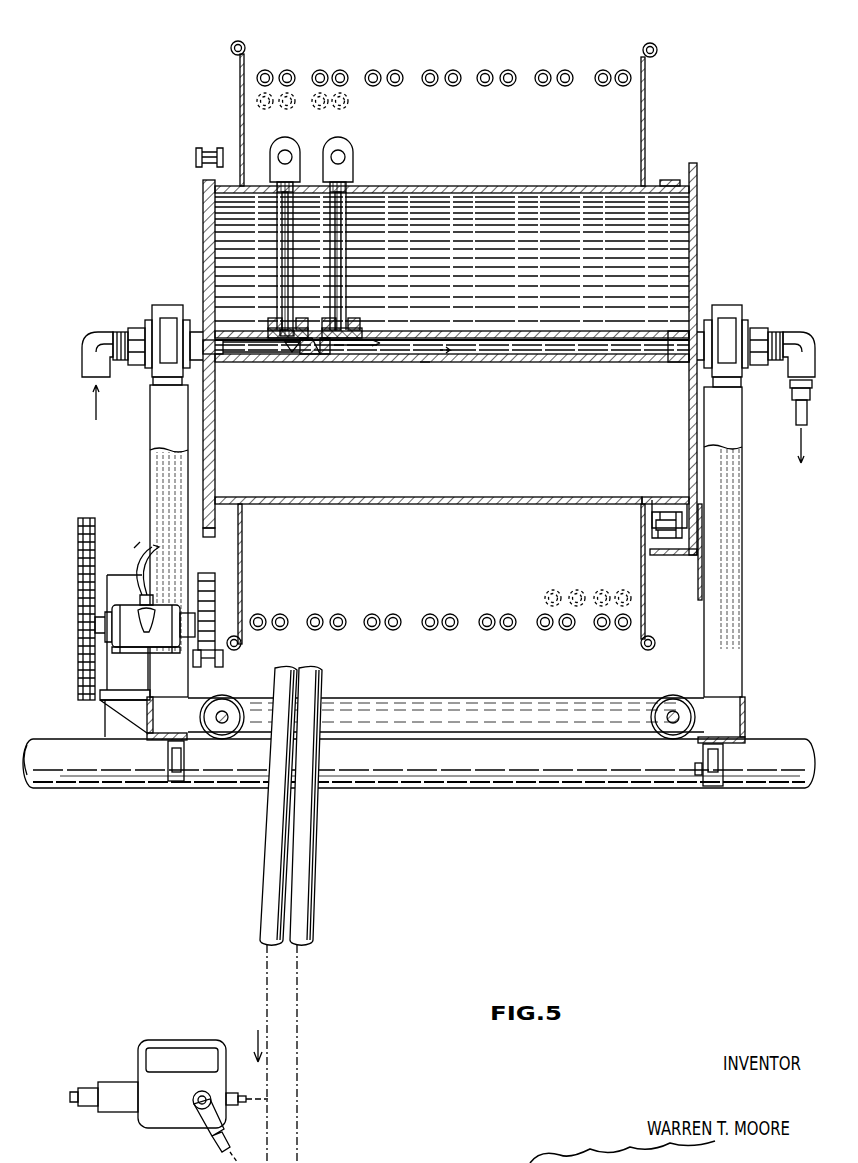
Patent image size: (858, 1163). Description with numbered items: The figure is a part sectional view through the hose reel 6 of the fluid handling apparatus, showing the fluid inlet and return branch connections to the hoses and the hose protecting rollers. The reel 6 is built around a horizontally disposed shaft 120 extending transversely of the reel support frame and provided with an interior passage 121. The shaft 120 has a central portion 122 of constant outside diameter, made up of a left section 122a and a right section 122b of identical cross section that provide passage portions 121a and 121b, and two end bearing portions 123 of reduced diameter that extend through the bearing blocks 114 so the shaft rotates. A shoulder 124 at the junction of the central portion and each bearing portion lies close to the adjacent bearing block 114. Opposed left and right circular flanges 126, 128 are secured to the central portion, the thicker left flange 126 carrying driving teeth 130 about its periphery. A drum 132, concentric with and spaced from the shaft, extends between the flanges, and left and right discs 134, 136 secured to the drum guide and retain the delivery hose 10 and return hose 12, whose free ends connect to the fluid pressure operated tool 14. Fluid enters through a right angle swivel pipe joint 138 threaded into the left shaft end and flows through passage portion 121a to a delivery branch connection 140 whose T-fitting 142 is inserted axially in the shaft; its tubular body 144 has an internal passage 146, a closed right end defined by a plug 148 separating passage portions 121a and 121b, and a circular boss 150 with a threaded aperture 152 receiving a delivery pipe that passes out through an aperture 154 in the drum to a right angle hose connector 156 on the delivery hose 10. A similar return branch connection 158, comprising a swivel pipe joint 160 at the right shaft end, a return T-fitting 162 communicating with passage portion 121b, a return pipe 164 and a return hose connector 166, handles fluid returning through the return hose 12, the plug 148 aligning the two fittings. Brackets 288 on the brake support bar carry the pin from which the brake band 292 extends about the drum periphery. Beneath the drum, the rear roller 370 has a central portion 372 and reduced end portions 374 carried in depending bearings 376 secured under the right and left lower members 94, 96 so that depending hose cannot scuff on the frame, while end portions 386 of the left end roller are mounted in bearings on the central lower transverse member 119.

The reel 6 is at (694, 193).
The delivery hose 10 is at (276, 816).
The return hose 12 is at (306, 886).
The fluid pressure operated tool 14 is at (194, 1100).
The right lower member 94 is at (743, 729).
The left lower member 96 is at (147, 740).
The bearing block 114 is at (166, 302).
The central lower transverse member 119 is at (410, 716).
The shaft 120 is at (680, 316).
The interior passage 121 is at (526, 332).
The passage portion 121a is at (238, 367).
The passage portion 121b is at (446, 356).
The central portion 122 is at (474, 332).
The left section 122a is at (208, 367).
The right section 122b is at (424, 362).
The end bearing portion 123 is at (134, 330).
The shoulder 124 is at (200, 324).
The left circular flange 126 is at (210, 213).
The right circular flange 128 is at (700, 235).
The driving teeth 130 is at (214, 530).
The drum 132 is at (524, 186).
The left disc 134 is at (240, 52).
The right disc 136 is at (645, 74).
The right angle swivel pipe joint 138 is at (82, 355).
The delivery branch connection 140 is at (272, 246).
The T-fitting 142 is at (293, 366).
The tubular body 144 is at (254, 358).
The internal passage 146 is at (306, 320).
The plug 148 is at (306, 364).
The circular boss 150 is at (269, 320).
The threaded aperture 152 is at (280, 270).
The aperture 154 is at (272, 184).
The right angle hose connector 156 is at (292, 157).
The return branch connection 158 is at (368, 226).
The right angle swivel pipe joint 160 is at (802, 350).
The return T-fitting 162 is at (362, 371).
The return pipe 164 is at (347, 275).
The return hose connector 166 is at (352, 155).
The bracket 288 is at (677, 540).
The brake band 292 is at (666, 178).
The rear roller 370 is at (401, 790).
The central portion 372 is at (471, 776).
The end portion 374 is at (699, 780).
The bearing 376 is at (183, 772).
The end portion 386 is at (224, 708).